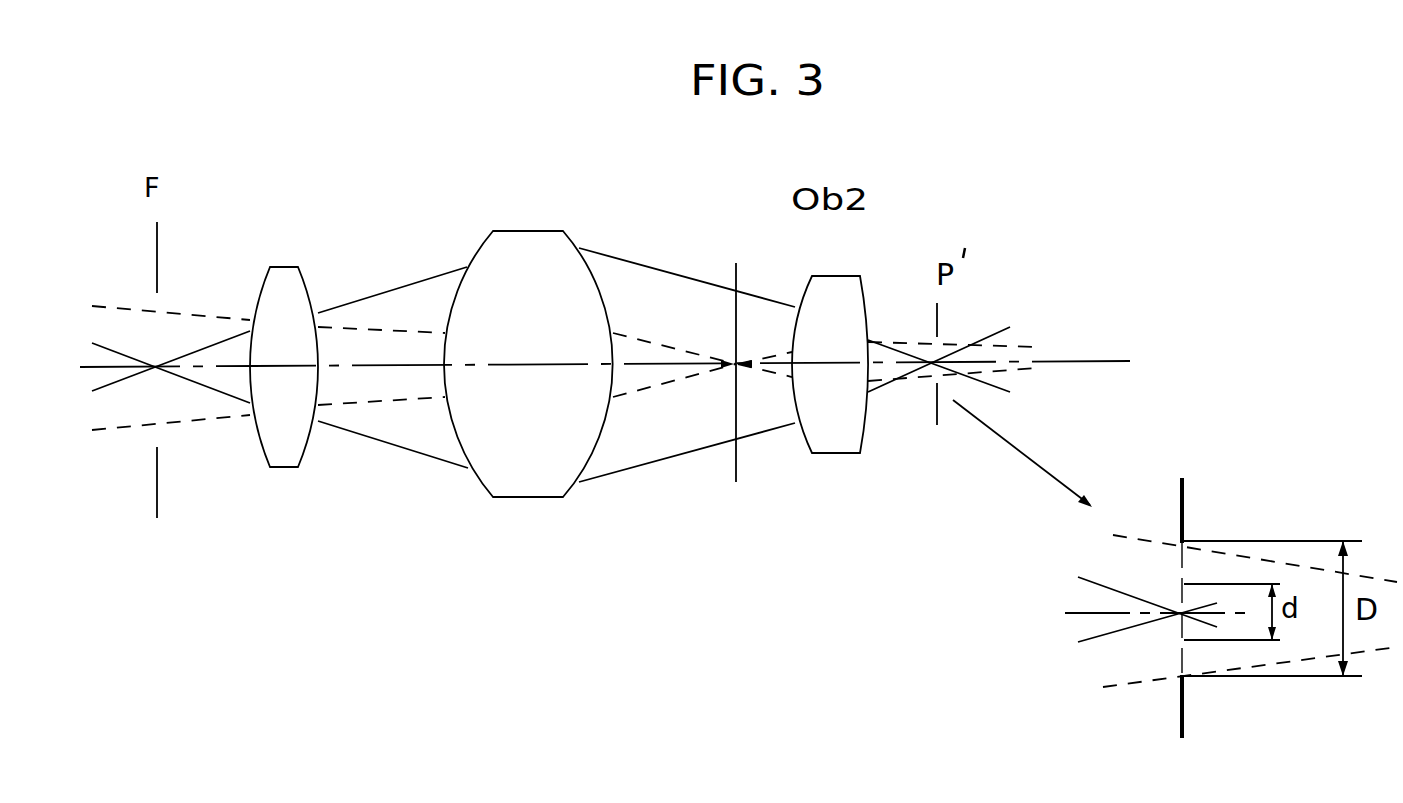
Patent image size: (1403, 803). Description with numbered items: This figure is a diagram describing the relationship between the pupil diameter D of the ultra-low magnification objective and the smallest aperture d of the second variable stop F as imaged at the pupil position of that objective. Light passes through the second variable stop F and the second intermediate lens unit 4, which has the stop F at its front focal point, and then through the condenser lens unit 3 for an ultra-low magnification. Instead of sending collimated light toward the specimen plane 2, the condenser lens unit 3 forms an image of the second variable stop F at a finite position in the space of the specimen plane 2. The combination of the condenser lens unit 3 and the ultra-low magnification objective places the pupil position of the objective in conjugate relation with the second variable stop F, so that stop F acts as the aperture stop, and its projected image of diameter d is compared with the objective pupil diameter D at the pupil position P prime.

The specimen plane 2 is at (737, 267).
The lens component LC3 3 is at (528, 339).
The lens L4 4 is at (284, 325).